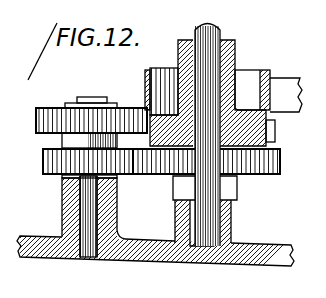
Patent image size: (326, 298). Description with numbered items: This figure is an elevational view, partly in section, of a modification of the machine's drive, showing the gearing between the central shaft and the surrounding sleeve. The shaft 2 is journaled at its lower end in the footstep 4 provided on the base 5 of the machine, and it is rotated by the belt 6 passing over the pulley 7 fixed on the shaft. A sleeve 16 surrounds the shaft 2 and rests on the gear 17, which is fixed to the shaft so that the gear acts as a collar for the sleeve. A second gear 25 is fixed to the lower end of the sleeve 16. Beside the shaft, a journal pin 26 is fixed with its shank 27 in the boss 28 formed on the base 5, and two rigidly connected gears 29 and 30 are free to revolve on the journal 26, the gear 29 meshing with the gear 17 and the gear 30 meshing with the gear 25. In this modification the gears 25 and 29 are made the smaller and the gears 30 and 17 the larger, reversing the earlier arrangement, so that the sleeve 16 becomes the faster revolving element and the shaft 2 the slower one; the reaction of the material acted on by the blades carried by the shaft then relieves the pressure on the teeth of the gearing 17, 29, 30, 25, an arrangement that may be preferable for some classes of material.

The shaft 2 is at (203, 36).
The footstep 4 is at (226, 218).
The base 5 is at (172, 250).
The belt 6 is at (281, 92).
The pulley 7 is at (272, 78).
The sleeve 16 is at (236, 52).
The gear 17 is at (281, 163).
The gear 25 is at (276, 127).
The journal pin 26 is at (93, 107).
The shank 27 is at (81, 208).
The boss 28 is at (108, 207).
The gear 29 is at (38, 153).
The gear 30 is at (36, 116).